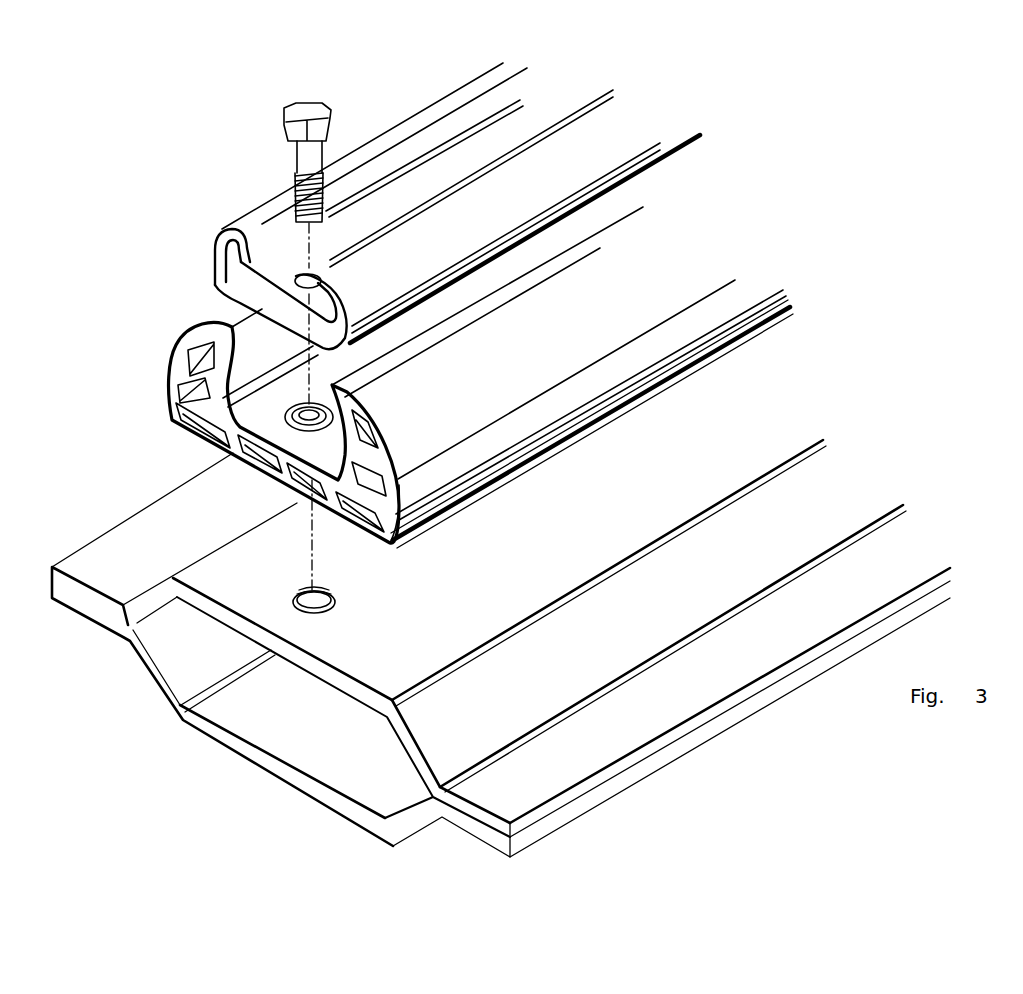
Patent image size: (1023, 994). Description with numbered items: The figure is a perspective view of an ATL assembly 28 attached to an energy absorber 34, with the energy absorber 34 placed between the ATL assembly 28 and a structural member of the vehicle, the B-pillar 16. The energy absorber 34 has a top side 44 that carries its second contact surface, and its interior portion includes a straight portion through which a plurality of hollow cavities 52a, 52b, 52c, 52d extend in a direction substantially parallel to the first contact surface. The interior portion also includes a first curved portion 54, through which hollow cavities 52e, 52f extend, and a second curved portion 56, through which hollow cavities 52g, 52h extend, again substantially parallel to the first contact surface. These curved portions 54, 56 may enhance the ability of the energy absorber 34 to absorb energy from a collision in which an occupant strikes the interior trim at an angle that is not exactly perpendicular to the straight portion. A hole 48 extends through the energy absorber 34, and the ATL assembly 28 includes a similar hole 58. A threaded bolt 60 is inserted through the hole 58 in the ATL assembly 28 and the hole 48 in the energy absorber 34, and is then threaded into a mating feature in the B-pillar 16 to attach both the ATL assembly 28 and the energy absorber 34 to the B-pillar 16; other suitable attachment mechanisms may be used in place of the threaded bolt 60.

The B-pillar 16 is at (253, 772).
The ATL assembly 28 is at (547, 100).
The energy absorber 34 is at (565, 443).
The top side 44 is at (714, 231).
The hole 48 is at (333, 405).
The hollow cavity 52a is at (195, 422).
The hollow cavity 52b is at (254, 458).
The hollow cavity 52c is at (307, 485).
The hollow cavity 52d is at (368, 524).
The hollow cavity 52e is at (183, 356).
The hollow cavity 52f is at (180, 391).
The hollow cavity 52g is at (378, 446).
The hollow cavity 52h is at (405, 495).
The first curved portion 54 is at (309, 440).
The second curved portion 56 is at (398, 475).
The hole 58 is at (298, 270).
The threaded bolt 60 is at (321, 152).